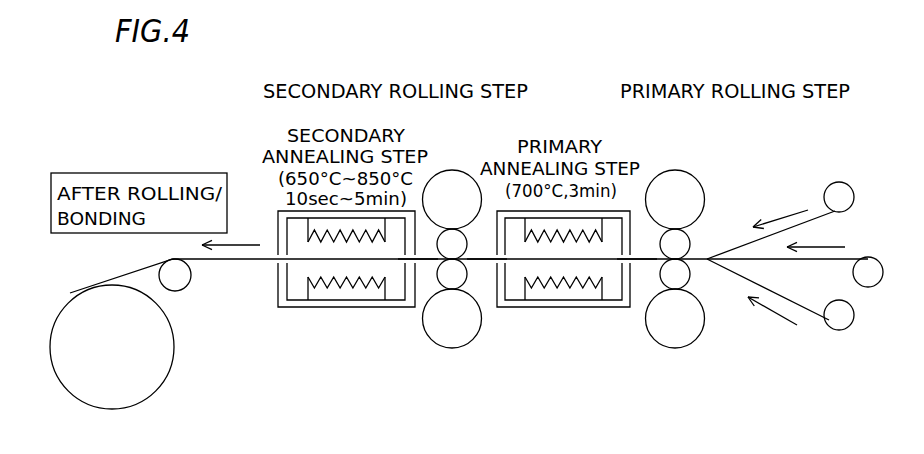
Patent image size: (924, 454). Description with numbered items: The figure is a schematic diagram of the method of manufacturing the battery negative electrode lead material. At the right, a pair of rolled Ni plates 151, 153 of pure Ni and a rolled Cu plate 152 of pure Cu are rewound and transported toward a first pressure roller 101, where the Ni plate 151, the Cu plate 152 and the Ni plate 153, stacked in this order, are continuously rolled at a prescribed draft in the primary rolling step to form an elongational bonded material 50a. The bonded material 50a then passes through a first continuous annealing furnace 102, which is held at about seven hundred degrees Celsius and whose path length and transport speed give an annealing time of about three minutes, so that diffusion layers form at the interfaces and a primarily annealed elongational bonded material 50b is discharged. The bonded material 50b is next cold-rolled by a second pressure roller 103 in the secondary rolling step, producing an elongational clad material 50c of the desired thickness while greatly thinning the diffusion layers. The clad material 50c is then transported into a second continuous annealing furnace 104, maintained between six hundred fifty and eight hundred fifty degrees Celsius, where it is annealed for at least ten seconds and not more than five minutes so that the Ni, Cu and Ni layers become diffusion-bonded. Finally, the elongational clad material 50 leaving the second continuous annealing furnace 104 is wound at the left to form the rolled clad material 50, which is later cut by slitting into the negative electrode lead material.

The elongational clad material 50 is at (242, 260).
The elongational bonded material 50a is at (637, 261).
The primarily annealed elongational bonded material 50b is at (487, 261).
The elongational clad material 50c is at (418, 261).
The first pressure roller 101 is at (676, 158).
The first continuous annealing furnace 102 is at (570, 130).
The second pressure roller 103 is at (453, 160).
The second continuous annealing furnace 104 is at (335, 328).
The rolled Ni plate 151 is at (837, 181).
The rolled Cu plate 152 is at (869, 256).
The rolled Ni plate 153 is at (838, 331).